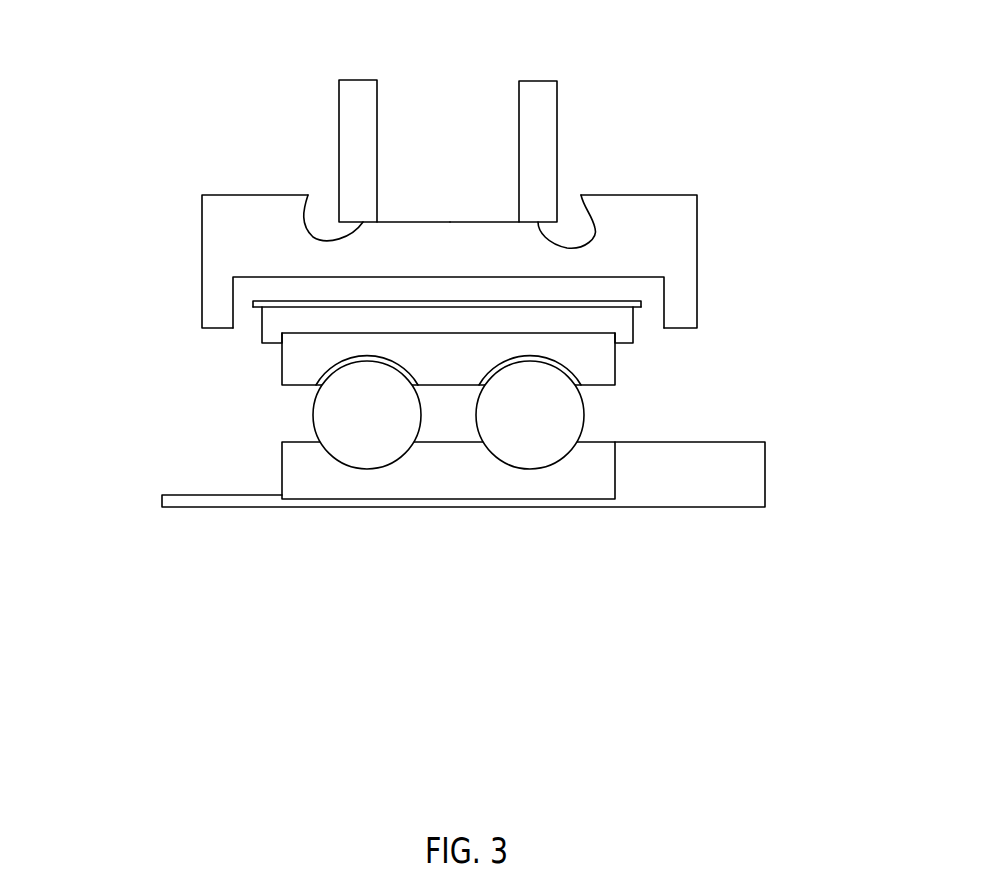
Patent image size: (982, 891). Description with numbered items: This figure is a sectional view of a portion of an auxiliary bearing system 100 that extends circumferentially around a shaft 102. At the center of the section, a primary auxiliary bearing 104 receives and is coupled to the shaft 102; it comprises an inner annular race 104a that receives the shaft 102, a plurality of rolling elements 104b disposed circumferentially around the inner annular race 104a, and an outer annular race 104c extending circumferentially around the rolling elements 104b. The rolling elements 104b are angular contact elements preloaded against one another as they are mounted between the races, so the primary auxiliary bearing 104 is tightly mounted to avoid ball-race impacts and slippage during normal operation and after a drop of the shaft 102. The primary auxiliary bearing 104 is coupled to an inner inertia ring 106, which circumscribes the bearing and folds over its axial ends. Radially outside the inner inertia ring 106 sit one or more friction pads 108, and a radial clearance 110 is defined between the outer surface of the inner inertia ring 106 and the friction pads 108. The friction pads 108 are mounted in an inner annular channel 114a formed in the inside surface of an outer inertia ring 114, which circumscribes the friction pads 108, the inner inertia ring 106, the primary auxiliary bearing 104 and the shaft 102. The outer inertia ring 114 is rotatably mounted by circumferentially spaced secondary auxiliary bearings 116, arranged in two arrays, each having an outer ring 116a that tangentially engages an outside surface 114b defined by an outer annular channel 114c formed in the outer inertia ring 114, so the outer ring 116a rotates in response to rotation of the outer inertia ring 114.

The auxiliary bearing system 100 is at (109, 144).
The shaft 102 is at (768, 477).
The primary auxiliary bearing 104 is at (303, 468).
The inner annular race 104a is at (347, 485).
The rolling elements 104b is at (388, 448).
The outer annular race 104c is at (597, 377).
The inner inertia ring 106 is at (628, 325).
The friction pads 108 is at (648, 293).
The radial clearance 110 is at (285, 305).
The outer inertia ring 114 is at (238, 253).
The inner annular channel 114a is at (412, 278).
The outside surface 114b is at (400, 220).
The outer annular channel 114c is at (495, 220).
The secondary auxiliary bearings 116 is at (358, 88).
The outer ring 116a is at (308, 195).